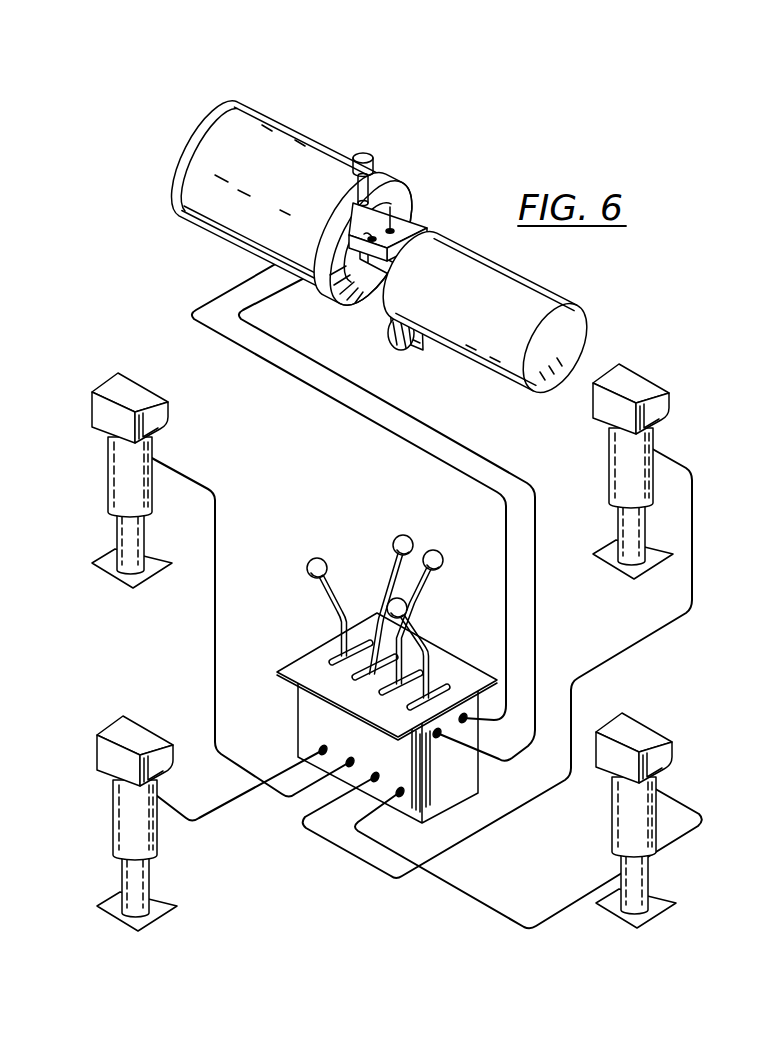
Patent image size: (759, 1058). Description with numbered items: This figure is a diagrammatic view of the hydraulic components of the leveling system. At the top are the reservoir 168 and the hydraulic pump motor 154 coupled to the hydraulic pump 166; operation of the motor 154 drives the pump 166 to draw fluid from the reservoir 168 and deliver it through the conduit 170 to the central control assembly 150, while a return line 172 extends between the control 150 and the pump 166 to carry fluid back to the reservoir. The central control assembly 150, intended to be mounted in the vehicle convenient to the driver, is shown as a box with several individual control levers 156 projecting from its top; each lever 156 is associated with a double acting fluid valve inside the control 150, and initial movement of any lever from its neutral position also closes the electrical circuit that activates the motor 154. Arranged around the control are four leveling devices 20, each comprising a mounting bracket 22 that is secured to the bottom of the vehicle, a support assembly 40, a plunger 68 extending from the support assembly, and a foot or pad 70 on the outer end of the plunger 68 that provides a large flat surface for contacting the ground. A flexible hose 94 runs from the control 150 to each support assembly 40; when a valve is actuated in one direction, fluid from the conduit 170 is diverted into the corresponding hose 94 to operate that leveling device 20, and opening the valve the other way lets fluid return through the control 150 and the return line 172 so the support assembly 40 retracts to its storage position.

The leveling device 20 is at (383, 643).
The mounting bracket 22 is at (392, 570).
The support assembly 40 is at (357, 644).
The second plunger 68 is at (378, 710).
The foot or pad 70 is at (396, 735).
The flexible hose 94 is at (215, 633).
The central control assembly 150 is at (435, 653).
The hydraulic pump motor 154 is at (507, 287).
The control levers 156 is at (430, 548).
The hydraulic pump 166 is at (417, 221).
The reservoir 168 is at (293, 140).
The conduit 170 is at (425, 421).
The return line 172 is at (387, 433).